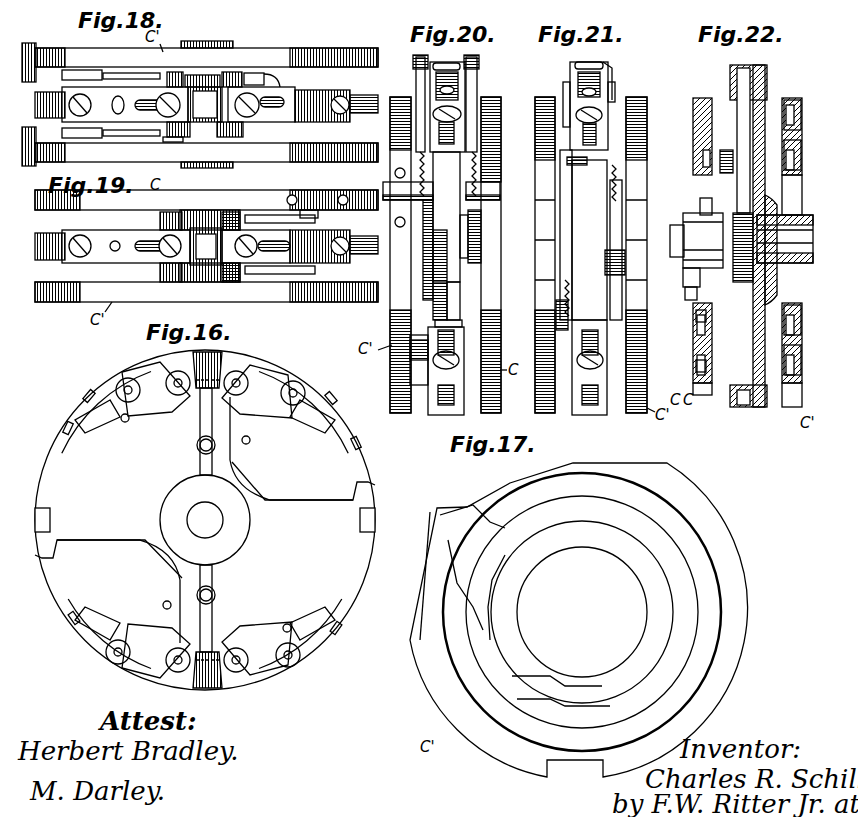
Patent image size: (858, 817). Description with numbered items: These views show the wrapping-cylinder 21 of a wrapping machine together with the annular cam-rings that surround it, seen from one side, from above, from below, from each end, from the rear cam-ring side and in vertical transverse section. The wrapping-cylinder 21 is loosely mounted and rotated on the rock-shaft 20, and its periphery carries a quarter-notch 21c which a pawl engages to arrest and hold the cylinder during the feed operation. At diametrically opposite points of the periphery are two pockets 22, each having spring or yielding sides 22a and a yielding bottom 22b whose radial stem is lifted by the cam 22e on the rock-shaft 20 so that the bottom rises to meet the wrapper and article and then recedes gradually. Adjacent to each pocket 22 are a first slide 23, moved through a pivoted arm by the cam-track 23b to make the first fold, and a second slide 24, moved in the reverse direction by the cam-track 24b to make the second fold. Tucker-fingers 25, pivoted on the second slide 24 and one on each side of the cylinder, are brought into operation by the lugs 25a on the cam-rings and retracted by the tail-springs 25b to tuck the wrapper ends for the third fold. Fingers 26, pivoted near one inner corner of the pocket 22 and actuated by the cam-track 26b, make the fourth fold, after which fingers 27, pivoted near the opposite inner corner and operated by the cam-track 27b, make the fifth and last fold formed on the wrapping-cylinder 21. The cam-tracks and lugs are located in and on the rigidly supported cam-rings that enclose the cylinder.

In FIG. 22, the rock-shaft 20 is at (684, 270).
In FIG. 16, the wrapping-cylinder 21 is at (205, 520).
In FIG. 21, the wrapping-cylinder 21 is at (592, 235).
In FIG. 16, the quarter-notch 21c is at (201, 520).
In FIG. 16, the pocket 22 is at (228, 358).
In FIG. 22, the pocket 22 is at (766, 250).
In FIG. 16, the spring or yielding sides 22a is at (196, 404).
In FIG. 18, the yielding bottom 22b is at (283, 104).
In FIG. 19, the yielding bottom 22b is at (207, 246).
In FIG. 16, the yielding bottom 22b is at (190, 355).
In FIG. 22, the yielding bottom 22b is at (770, 70).
In FIG. 22, the cam 22e is at (700, 205).
In FIG. 19, the first slide 23 is at (96, 240).
In FIG. 20, the first slide 23 is at (420, 395).
In FIG. 21, the first slide 23 is at (607, 100).
In FIG. 22, the cam-track 23b is at (693, 320).
In FIG. 18, the second slide 24 is at (111, 104).
In FIG. 19, the second slide 24 is at (300, 246).
In FIG. 20, the second slide 24 is at (500, 105).
In FIG. 22, the second slide 24 is at (693, 388).
In FIG. 17, the cam-track 24b is at (502, 555).
In FIG. 22, the cam-track 24b is at (803, 158).
In FIG. 18, the tucker-finger 25 is at (160, 70).
In FIG. 19, the tucker-finger 25 is at (255, 215).
In FIG. 20, the tucker-finger 25 is at (414, 78).
In FIG. 21, the tucker-finger 25 is at (560, 310).
In FIG. 18, the lug 25a is at (36, 78).
In FIG. 19, the lug 25a is at (320, 198).
In FIG. 20, the lug 25a is at (412, 196).
In FIG. 20, the tail-spring 25b is at (480, 165).
In FIG. 19, the folding-finger 26 is at (178, 215).
In FIG. 20, the folding-finger 26 is at (458, 417).
In FIG. 21, the folding-finger 26 is at (605, 68).
In FIG. 17, the cam-track 26b is at (581, 490).
In FIG. 22, the cam-track 26b is at (803, 108).
In FIG. 19, the folding-finger 27 is at (232, 215).
In FIG. 22, the cam-track 27b is at (693, 366).